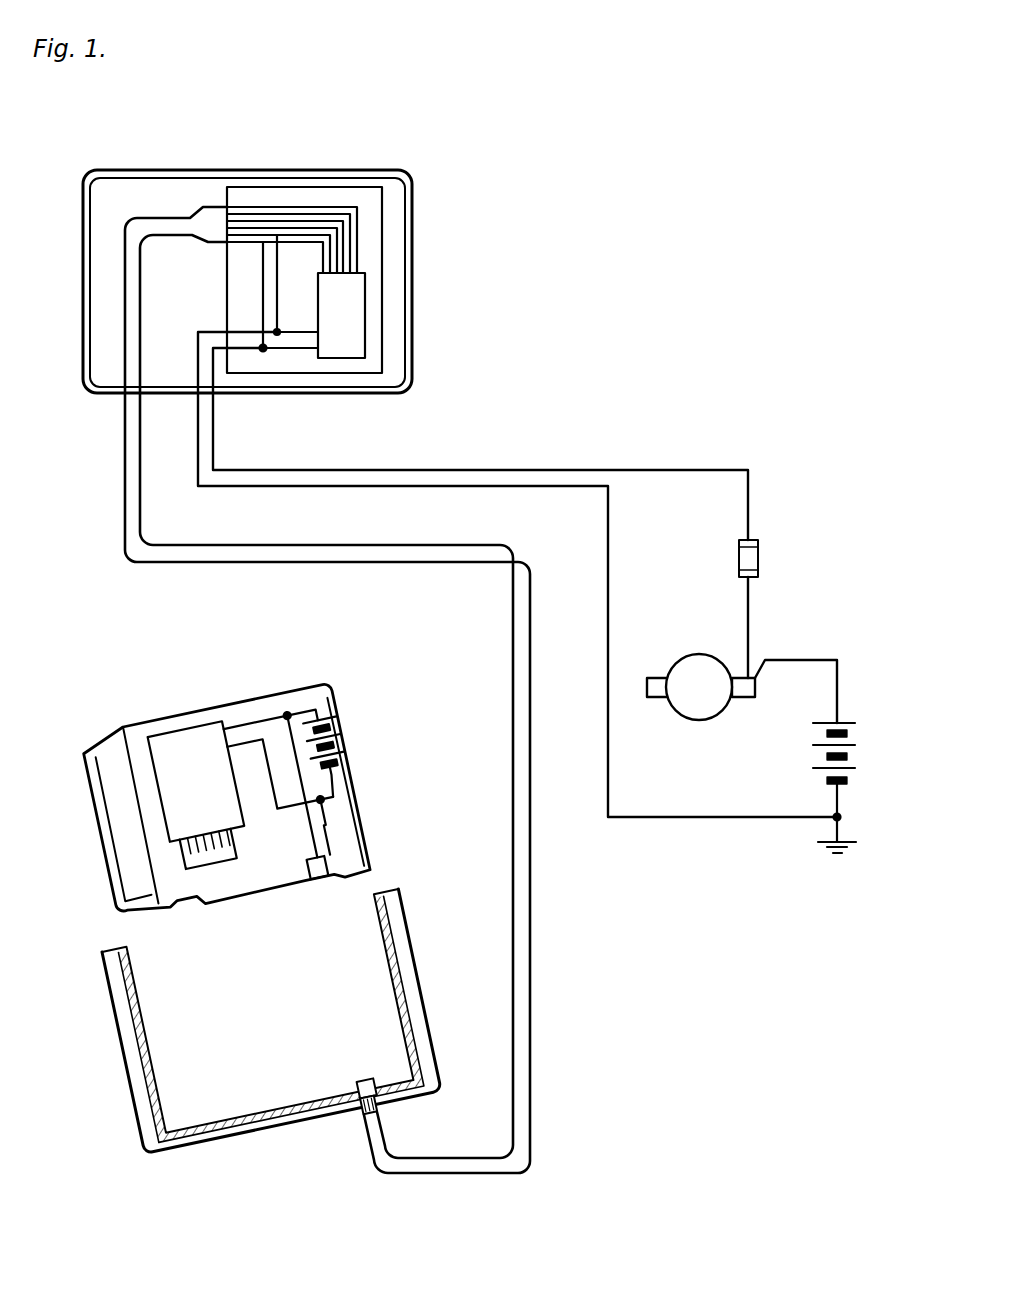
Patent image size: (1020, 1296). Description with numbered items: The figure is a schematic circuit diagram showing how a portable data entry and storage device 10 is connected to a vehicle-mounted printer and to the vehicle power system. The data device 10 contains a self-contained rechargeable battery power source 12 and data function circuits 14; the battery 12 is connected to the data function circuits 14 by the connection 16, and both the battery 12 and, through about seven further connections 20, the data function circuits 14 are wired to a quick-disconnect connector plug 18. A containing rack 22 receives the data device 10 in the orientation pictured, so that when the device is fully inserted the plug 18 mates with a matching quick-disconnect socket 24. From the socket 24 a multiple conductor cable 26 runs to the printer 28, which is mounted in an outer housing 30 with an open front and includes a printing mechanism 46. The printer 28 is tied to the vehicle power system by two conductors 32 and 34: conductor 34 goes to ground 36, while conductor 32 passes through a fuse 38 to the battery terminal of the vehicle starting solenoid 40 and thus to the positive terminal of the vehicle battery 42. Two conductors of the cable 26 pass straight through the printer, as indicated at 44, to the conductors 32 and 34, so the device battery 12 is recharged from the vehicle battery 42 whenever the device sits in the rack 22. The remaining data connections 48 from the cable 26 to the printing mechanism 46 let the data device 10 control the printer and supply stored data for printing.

The portable data entry and storage device 10 is at (155, 712).
The self-contained rechargeable battery power source 12 is at (325, 720).
The data function circuits 14 is at (206, 799).
The connection between battery and data function circuits 16 is at (240, 715).
The quick-disconnect connector plug 18 is at (330, 868).
The connections from data function circuits to plug 20 is at (273, 853).
The containing rack 22 is at (133, 1050).
The quick-disconnect socket 24 is at (357, 1088).
The multiple conductor cable 26 is at (518, 603).
The printer 28 is at (383, 258).
The outer housing 30 is at (412, 208).
The conductor 32 is at (475, 468).
The conductor 34 is at (437, 487).
The ground 36 is at (838, 802).
The fuse 38 is at (760, 562).
The starting solenoid 40 is at (690, 654).
The vehicle battery 42 is at (843, 718).
The straight-through charging conductors 44 is at (250, 285).
The printing mechanism 46 is at (355, 330).
The data connections 48 is at (310, 203).